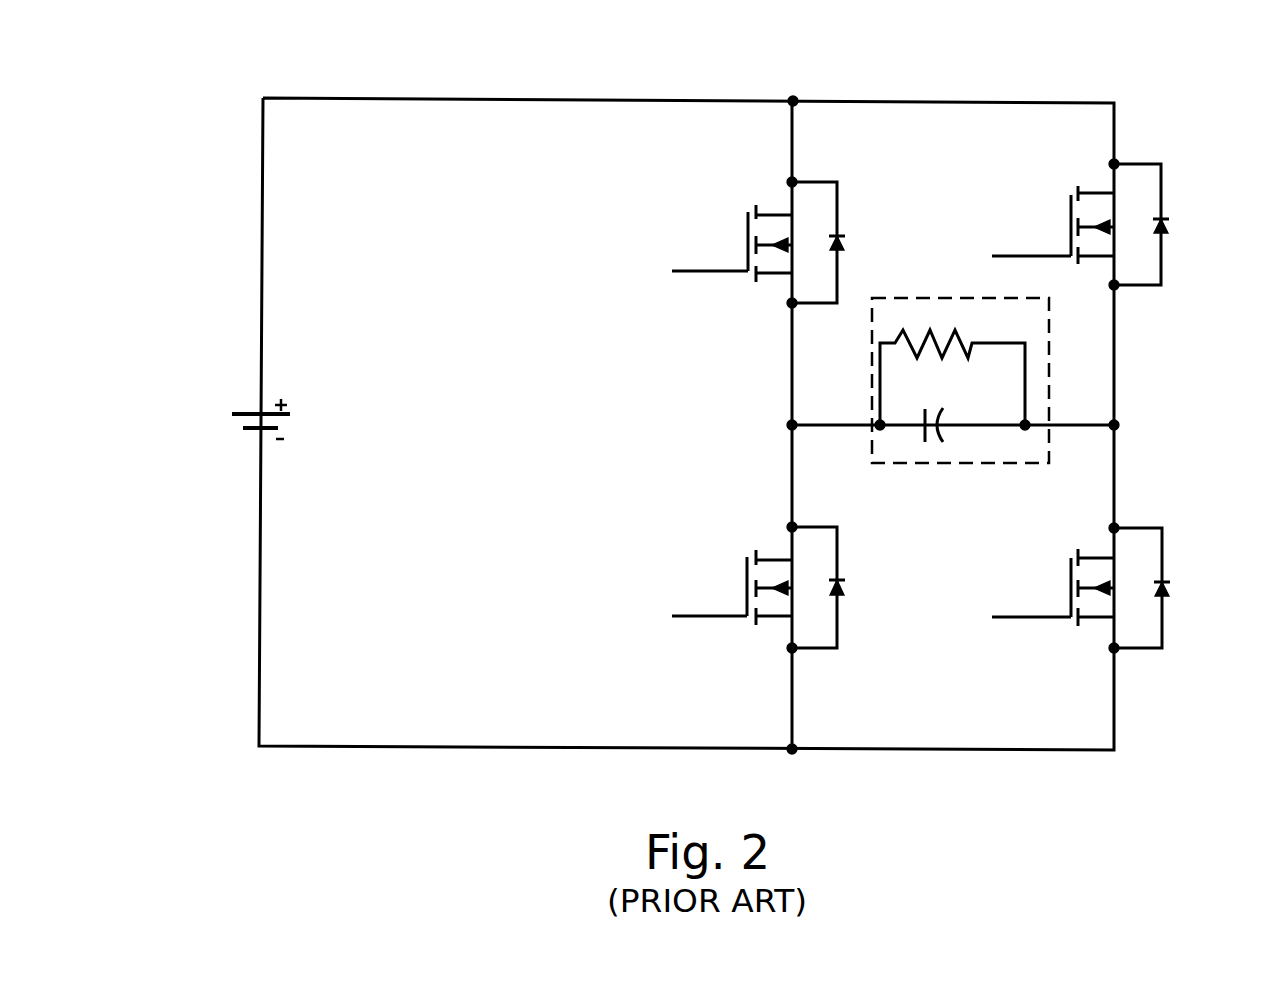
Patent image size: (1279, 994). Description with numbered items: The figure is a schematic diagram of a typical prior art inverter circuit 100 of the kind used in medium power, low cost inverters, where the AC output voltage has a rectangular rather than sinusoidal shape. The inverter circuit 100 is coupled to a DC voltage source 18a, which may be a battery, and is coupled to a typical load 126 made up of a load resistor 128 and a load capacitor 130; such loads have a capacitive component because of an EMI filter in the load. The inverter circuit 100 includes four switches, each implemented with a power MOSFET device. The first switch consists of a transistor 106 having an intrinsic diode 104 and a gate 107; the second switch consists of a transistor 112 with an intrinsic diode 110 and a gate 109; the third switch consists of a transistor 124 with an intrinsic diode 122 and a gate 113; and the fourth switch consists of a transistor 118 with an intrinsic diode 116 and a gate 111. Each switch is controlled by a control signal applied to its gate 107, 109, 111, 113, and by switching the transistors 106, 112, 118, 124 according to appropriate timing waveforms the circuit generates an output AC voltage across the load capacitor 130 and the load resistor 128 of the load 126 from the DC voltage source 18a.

The prior art inverter circuit 100 is at (906, 52).
The DC voltage source 18a is at (236, 386).
The transistor 106 is at (745, 195).
The gate 107 is at (703, 274).
The intrinsic diode 104 is at (843, 241).
The transistor 124 is at (1058, 184).
The gate 113 is at (1025, 258).
The intrinsic diode 122 is at (1169, 226).
The transistor 112 is at (738, 545).
The gate 109 is at (692, 618).
The intrinsic diode 110 is at (843, 586).
The transistor 118 is at (1068, 546).
The gate 111 is at (1025, 620).
The intrinsic diode 116 is at (1170, 588).
The load 126 is at (988, 380).
The load resistor 128 is at (980, 343).
The load capacitor 130 is at (957, 409).